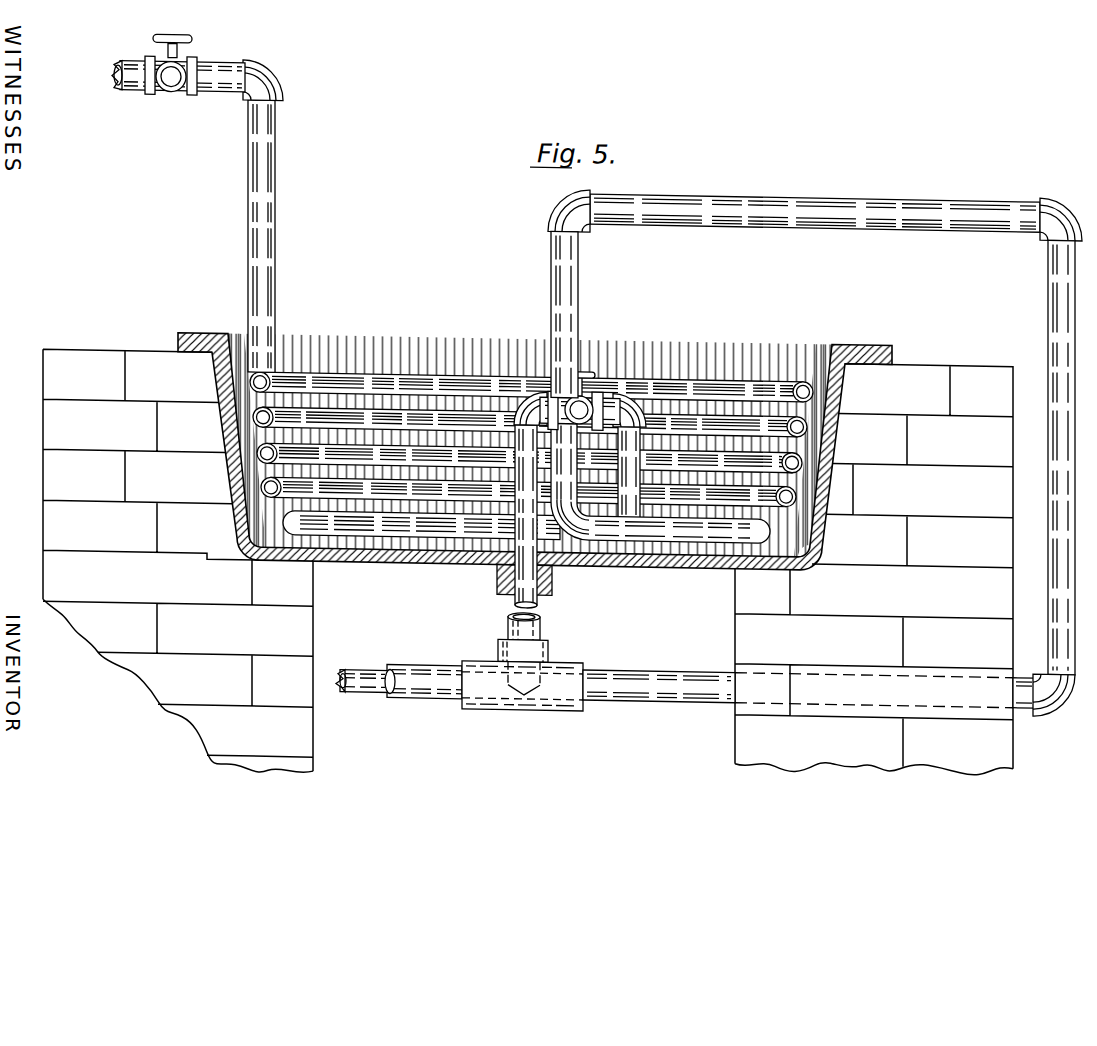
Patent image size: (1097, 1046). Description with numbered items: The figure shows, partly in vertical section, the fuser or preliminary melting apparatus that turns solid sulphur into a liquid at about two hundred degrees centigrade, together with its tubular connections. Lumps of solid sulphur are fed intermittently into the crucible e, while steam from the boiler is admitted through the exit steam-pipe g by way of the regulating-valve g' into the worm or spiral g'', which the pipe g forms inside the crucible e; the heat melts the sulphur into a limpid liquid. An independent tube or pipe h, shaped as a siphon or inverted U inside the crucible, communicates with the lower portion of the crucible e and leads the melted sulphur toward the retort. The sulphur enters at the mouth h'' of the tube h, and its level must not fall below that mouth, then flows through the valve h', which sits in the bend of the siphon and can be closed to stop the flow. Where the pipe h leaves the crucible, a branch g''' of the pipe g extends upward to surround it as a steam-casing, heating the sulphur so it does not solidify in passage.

The exit steam-pipe g is at (662, 399).
The regulating-valve g' is at (178, 61).
The worm or spiral g'' is at (509, 478).
The branch of the steam-pipe g''' is at (522, 668).
The independent tube or pipe h is at (531, 550).
The valve for the pipe h h' is at (580, 387).
The mouth of the tube h h'' is at (660, 478).
The crucible e is at (535, 452).